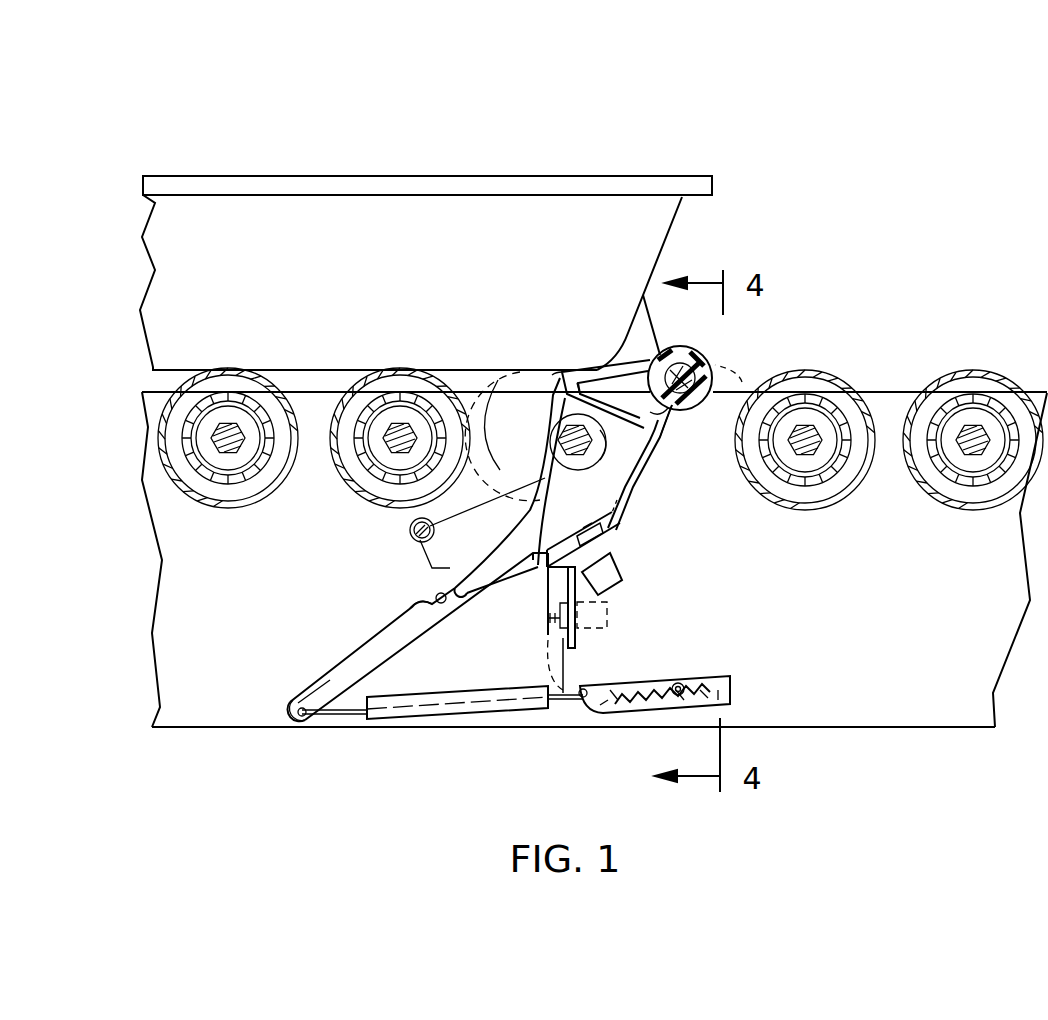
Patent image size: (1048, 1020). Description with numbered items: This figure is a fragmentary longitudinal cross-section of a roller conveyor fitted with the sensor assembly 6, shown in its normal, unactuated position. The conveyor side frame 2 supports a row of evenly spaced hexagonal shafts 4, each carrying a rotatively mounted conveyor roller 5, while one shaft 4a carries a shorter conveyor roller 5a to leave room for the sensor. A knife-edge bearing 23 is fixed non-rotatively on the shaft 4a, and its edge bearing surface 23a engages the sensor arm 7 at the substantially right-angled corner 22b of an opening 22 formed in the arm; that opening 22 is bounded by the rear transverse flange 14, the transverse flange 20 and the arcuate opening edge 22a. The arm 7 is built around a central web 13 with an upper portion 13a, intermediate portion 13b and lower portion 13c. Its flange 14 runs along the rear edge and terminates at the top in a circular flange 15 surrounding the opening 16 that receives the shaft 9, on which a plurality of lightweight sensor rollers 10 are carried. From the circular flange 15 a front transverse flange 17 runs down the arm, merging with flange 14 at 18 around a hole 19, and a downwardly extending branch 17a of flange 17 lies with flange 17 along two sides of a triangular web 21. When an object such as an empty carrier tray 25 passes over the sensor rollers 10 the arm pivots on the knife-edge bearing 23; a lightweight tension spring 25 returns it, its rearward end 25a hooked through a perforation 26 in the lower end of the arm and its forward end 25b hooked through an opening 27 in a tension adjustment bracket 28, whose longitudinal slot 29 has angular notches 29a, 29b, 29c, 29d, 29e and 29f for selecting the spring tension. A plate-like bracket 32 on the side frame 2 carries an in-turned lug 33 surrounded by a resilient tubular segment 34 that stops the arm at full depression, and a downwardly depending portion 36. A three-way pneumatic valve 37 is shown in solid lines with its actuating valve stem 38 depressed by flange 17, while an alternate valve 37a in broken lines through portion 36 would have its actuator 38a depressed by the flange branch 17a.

The side frame 2 is at (977, 656).
The shaft 4 is at (400, 438).
The shaft 4a is at (512, 480).
The conveyor roller 5 is at (283, 478).
The conveyor roller 5a is at (498, 380).
The sensor assembly 6 is at (705, 348).
The sensor arm 7 is at (350, 650).
The shaft 9 is at (686, 368).
The sensor roller 10 is at (640, 297).
The central web 13 is at (620, 482).
The upper portion 13a is at (633, 340).
The intermediate portion 13b is at (610, 512).
The lower portion 13c is at (305, 690).
The transverse flange 14 is at (330, 665).
The circular flange 15 is at (742, 382).
The opening 16 is at (668, 352).
The transverse flange 17 is at (663, 470).
The flange branch 17a is at (545, 600).
The merging point 18 is at (408, 607).
The hole 19 is at (436, 596).
The transverse flange 20 is at (668, 408).
The triangular web 21 is at (460, 625).
The opening 22 is at (608, 440).
The arcuate opening edge 22a is at (578, 463).
The corner 22b is at (575, 383).
The knife-edge bearing 23 is at (555, 412).
The edge bearing surface 23a is at (552, 375).
The tension spring 25 is at (563, 249).
The rearward end 25a is at (350, 712).
The forward end 25b is at (562, 697).
The perforation 26 is at (298, 718).
The opening 27 is at (580, 700).
The tension adjustment bracket 28 is at (598, 707).
The longitudinal slot 29 is at (622, 705).
The angular notch 29a is at (612, 690).
The angular notch 29b is at (650, 690).
The angular notch 29c is at (680, 690).
The angular notch 29d is at (690, 688).
The angular notch 29e is at (735, 680).
The angular notch 29f is at (735, 700).
The plate-like bracket 32 is at (440, 575).
The in-turned lug 33 is at (412, 535).
The tubular segment 34 is at (412, 527).
The downwardly depending portion 36 is at (575, 642).
The three-way pneumatic valve 37 is at (612, 578).
The three-way pneumatic valve 37a is at (610, 612).
The actuating valve stem 38 is at (603, 540).
The actuator valve 38a is at (548, 650).